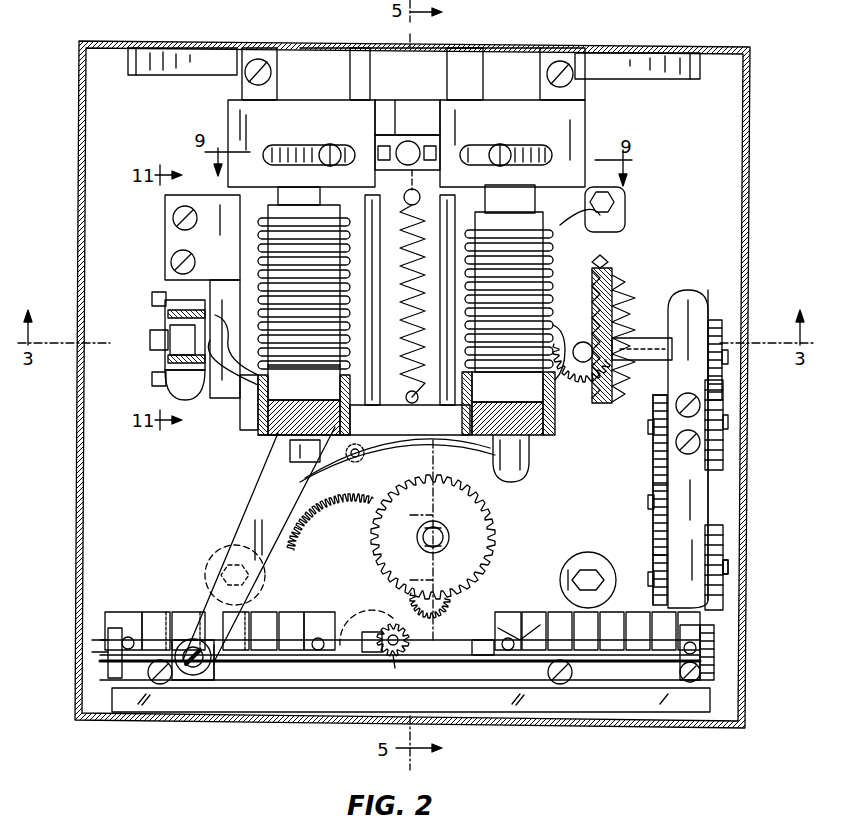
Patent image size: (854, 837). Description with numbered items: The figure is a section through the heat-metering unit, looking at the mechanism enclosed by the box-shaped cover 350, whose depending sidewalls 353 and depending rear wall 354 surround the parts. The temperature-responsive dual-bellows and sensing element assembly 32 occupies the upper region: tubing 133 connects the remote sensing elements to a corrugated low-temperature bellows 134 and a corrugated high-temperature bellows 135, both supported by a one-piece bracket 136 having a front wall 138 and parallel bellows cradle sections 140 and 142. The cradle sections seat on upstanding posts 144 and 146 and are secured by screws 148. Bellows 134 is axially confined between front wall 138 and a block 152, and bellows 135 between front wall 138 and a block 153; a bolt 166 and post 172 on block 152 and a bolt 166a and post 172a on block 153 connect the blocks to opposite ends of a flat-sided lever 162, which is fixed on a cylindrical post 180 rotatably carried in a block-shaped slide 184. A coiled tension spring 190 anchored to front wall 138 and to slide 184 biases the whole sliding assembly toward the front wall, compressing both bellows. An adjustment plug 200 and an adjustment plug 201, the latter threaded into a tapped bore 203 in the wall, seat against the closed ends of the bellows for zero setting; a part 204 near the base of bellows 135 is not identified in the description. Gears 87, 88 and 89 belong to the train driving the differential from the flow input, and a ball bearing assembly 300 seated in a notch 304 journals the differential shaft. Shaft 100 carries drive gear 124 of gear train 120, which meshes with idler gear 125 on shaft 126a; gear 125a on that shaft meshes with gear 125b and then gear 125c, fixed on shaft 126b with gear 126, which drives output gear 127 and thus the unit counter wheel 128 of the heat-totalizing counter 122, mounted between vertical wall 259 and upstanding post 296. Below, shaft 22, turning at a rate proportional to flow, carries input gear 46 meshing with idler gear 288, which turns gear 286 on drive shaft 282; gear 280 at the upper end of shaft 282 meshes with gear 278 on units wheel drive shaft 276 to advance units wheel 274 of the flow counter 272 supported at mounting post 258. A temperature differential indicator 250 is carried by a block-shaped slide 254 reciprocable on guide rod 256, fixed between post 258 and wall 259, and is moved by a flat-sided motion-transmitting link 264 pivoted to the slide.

The depending sidewalls 353 is at (748, 82).
The box-shaped cover 350 is at (300, 48).
The depending rear wall 354 is at (420, 48).
The upstanding post 144 is at (220, 50).
The upstanding post 146 is at (642, 53).
The screws 148 is at (266, 60).
The block 152 is at (296, 100).
The block 153 is at (585, 120).
The bolt 166 is at (292, 145).
The post 172 is at (331, 144).
The post 172a is at (502, 144).
The bolt 166a is at (543, 145).
The flat-sided lever 162 is at (388, 105).
The cylindrical post 180 is at (409, 142).
The bellows cradle section 140 is at (262, 215).
The temperature-responsive dual-bellows and sensing element assembly 32 is at (258, 248).
The low-temperature bellows 134 is at (262, 270).
The tubing 133 is at (215, 320).
The antifriction ball bearing assembly 300 is at (165, 335).
The notch 304 is at (168, 360).
The one-piece bracket 136 is at (245, 428).
The tapped bore 203 is at (290, 435).
The adjustment plug 200 is at (298, 462).
The block-shaped slide 184 is at (372, 200).
The coiled tension spring 190 is at (400, 284).
The shaft 22 is at (364, 456).
The front wall 138 is at (440, 445).
The bellows cradle section 142 is at (612, 195).
The high-temperature bellows 135 is at (555, 232).
The bellows base 204 is at (540, 435).
The adjustment plug 201 is at (520, 480).
The gear 88 is at (583, 385).
The gear 89 is at (592, 264).
The gear 87 is at (612, 285).
The shaft 100 is at (655, 338).
The drive gear 124 is at (708, 322).
The idler gear 125 is at (722, 440).
The vertical wall 259 is at (660, 525).
The idler gear 125a is at (658, 405).
The idler gear 125b is at (655, 485).
The idler gear 125c is at (656, 558).
The shaft 126a is at (723, 420).
The idler gear 126 is at (723, 548).
The shaft 126b is at (728, 568).
The gear train 120 is at (733, 498).
The output gear 127 is at (714, 668).
The idler gear 288 is at (378, 540).
The input gear 46 is at (325, 506).
The motion-transmitting link 264 is at (255, 520).
The temperature differential indicator 250 is at (185, 680).
The block-shaped slide 254 is at (216, 680).
The counter 272 is at (164, 604).
The upstanding mounting post 258 is at (113, 628).
The cylindrical guide rod 256 is at (465, 661).
The units wheel 274 is at (302, 662).
The units wheel drive shaft 276 is at (345, 630).
The gear 278 is at (382, 632).
The gear 280 is at (400, 632).
The gear 286 is at (445, 612).
The upstanding post 296 is at (480, 634).
The drive shaft 282 is at (393, 660).
The counter 122 is at (549, 603).
The unit counter wheel 128 is at (665, 655).